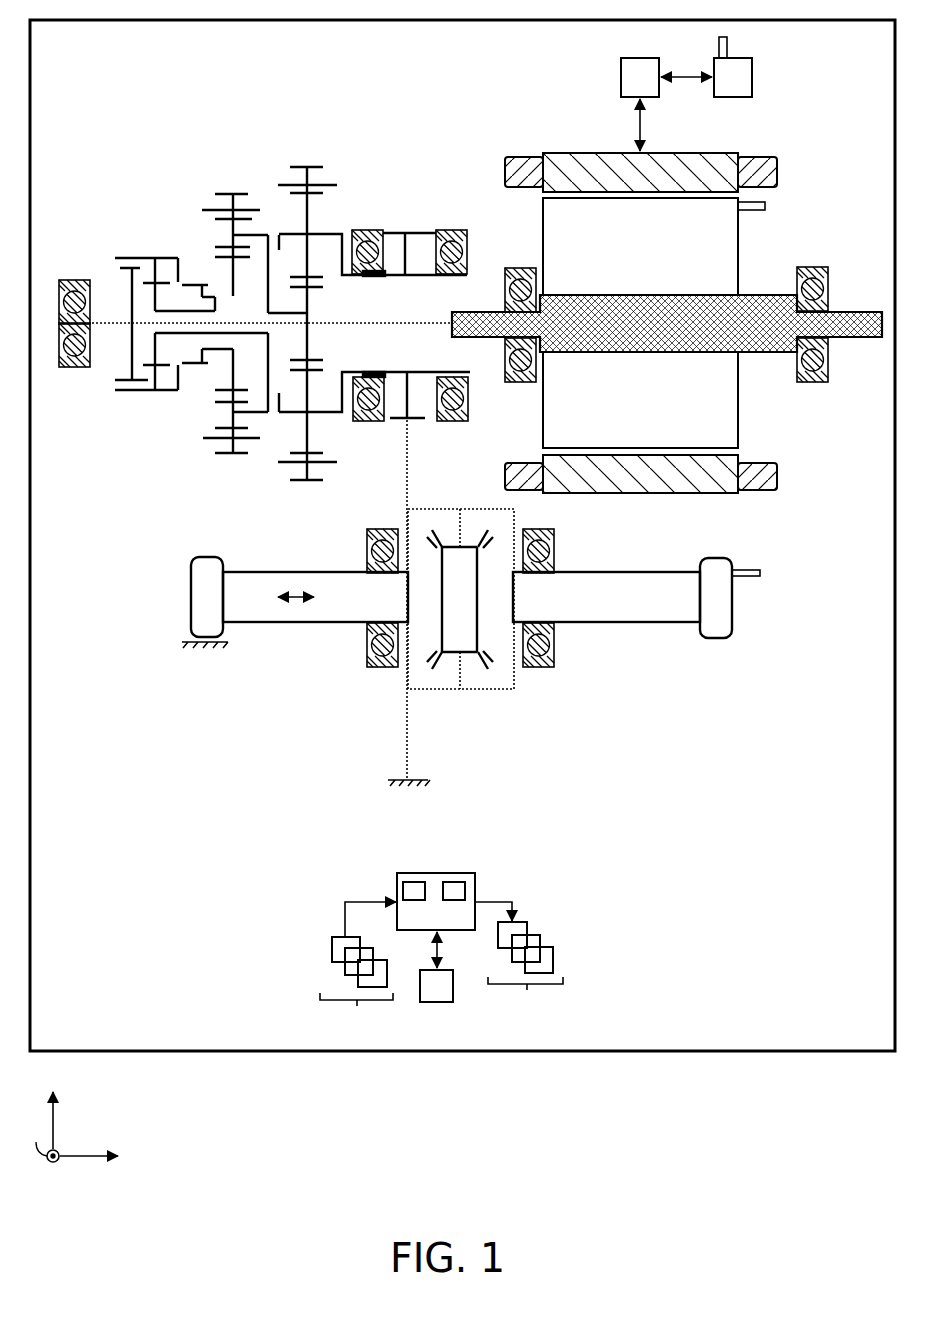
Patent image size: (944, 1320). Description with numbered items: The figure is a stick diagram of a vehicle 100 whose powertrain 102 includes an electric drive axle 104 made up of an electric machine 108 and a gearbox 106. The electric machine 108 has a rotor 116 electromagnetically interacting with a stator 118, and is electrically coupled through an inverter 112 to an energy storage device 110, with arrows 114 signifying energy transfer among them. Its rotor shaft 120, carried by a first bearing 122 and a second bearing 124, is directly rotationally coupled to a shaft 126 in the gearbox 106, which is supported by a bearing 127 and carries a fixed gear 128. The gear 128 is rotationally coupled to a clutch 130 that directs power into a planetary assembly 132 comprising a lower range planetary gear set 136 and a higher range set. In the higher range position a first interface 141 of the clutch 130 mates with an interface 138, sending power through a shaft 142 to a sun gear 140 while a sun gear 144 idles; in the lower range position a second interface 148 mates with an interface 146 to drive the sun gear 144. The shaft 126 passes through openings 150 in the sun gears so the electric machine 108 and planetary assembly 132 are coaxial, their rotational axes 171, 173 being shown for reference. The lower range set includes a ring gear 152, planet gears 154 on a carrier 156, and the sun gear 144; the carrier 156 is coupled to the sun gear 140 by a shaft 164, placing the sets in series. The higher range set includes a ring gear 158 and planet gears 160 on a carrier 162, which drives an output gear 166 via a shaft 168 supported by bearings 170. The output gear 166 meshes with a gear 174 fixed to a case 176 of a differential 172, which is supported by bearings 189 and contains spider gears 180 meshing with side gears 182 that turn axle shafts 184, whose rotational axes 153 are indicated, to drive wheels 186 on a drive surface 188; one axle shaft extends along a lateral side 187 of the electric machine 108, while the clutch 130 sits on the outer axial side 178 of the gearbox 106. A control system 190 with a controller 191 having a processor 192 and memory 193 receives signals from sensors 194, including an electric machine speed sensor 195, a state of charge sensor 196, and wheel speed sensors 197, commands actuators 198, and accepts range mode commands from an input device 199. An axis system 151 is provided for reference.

The vehicle 100 is at (37, 21).
The powertrain 102 is at (85, 108).
The electric drive axle 104 is at (75, 160).
The gearbox 106 is at (140, 180).
The electric machine 108 is at (562, 142).
The energy storage device 110 is at (752, 80).
The inverter 112 is at (621, 73).
The arrows 114 is at (641, 125).
The rotor 116 is at (740, 231).
The stator 118 is at (725, 153).
The rotor shaft 120 is at (487, 312).
The first bearing 122 is at (815, 267).
The second bearing 124 is at (520, 267).
The shaft 126 is at (401, 321).
The bearing 127 is at (62, 276).
The gear 128 is at (122, 275).
The clutch 130 is at (149, 242).
The planetary assembly 132 is at (257, 135).
The lower range planetary gear set 136 is at (234, 184).
The interface 138 is at (157, 360).
The sun gear 140 is at (316, 288).
The first interface 141 is at (144, 283).
The shaft 142 is at (300, 333).
The sun gear 144 is at (215, 257).
The interface 146 is at (205, 366).
The second interface 148 is at (200, 286).
The openings 150 is at (318, 321).
The axis system 151 is at (110, 1120).
The ring gear 152 is at (203, 210).
The rotational axes 153 is at (616, 598).
The planet gears 154 is at (218, 219).
The carrier 156 is at (279, 236).
The ring gear 158 is at (328, 185).
The planet gears 160 is at (310, 437).
The carrier 162 is at (327, 232).
The shaft 164 is at (268, 280).
The output gear 166 is at (408, 233).
The shaft 168 is at (370, 373).
The bearings 170 is at (481, 398).
The rotational axis 171 is at (651, 323).
The differential 172 is at (528, 512).
The rotational axis 173 is at (268, 323).
The gear 174 is at (418, 422).
The case 176 is at (421, 509).
The outer axial side 178 is at (104, 379).
The spider gears 180 is at (471, 536).
The side gears 182 is at (478, 545).
The axle shafts 184 is at (287, 572).
The drive wheels 186 is at (198, 557).
The lateral side 187 is at (622, 517).
The drive surface 188 is at (186, 642).
The bearings 189 is at (538, 670).
The control system 190 is at (579, 892).
The controller 191 is at (402, 873).
The processor 192 is at (403, 888).
The memory 193 is at (465, 888).
The sensors 194 is at (358, 968).
The electric machine speed sensor 195 is at (765, 206).
The energy storage device state of charge sensor 196 is at (719, 45).
The wheel speed sensors 197 is at (760, 573).
The actuators 198 is at (519, 960).
The input device 199 is at (436, 1002).